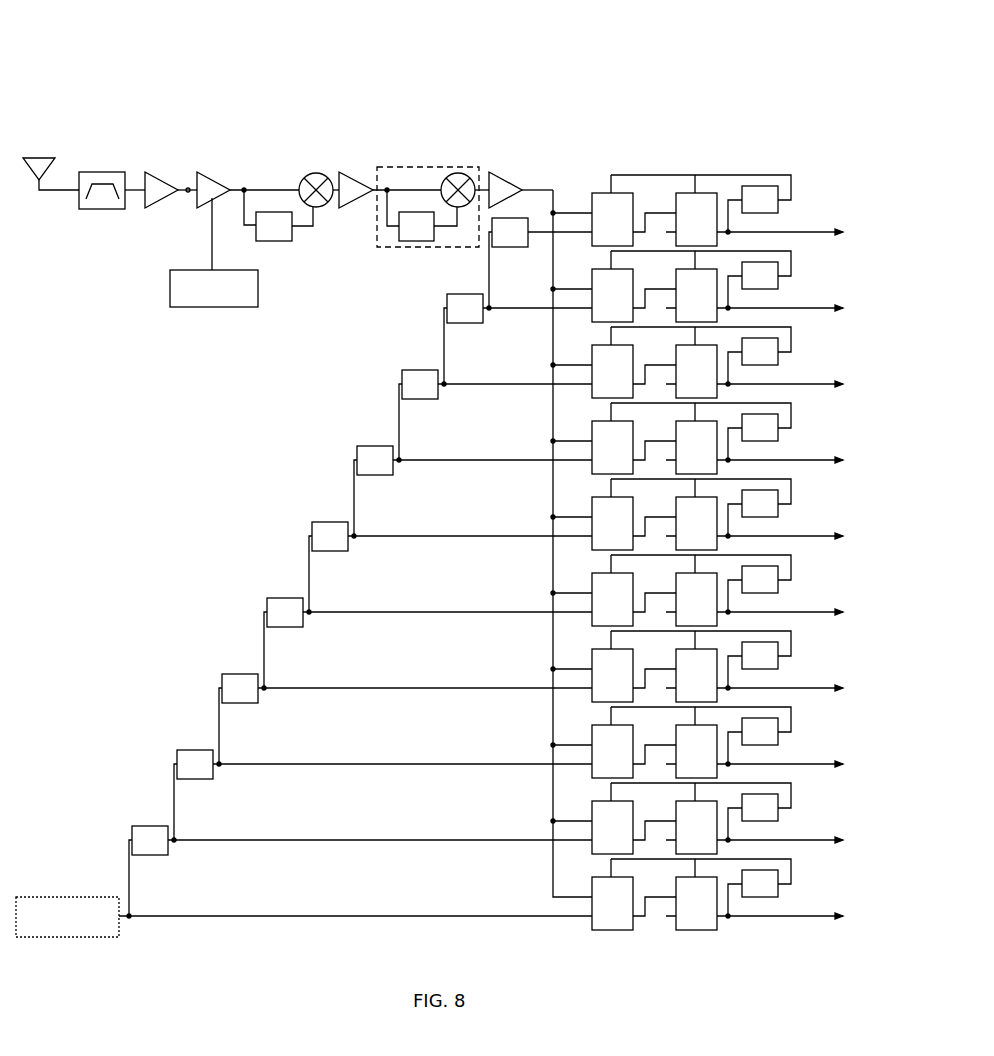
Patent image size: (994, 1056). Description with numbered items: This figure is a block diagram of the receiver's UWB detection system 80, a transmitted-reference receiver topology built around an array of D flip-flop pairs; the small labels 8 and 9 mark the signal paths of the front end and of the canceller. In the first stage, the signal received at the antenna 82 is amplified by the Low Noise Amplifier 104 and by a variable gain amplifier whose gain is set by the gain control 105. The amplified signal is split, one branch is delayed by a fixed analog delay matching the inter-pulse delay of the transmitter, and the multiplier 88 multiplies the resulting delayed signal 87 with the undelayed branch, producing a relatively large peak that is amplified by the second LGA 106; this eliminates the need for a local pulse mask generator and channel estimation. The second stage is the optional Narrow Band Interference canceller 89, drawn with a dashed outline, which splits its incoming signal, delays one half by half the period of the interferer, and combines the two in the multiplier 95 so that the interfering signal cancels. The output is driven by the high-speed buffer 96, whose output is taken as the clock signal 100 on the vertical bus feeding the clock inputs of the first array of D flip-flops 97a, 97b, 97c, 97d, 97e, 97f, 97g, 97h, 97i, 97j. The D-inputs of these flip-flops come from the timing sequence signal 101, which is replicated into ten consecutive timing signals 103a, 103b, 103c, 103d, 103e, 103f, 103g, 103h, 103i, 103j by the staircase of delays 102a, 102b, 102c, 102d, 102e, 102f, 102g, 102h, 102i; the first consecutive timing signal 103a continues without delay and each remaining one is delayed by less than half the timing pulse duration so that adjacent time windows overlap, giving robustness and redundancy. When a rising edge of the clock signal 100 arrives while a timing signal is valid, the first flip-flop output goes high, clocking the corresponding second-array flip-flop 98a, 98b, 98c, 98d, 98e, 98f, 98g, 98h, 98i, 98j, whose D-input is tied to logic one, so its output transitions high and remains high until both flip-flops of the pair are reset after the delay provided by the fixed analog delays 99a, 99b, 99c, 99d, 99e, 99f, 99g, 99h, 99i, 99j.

The UWB detection system 80 is at (106, 47).
The signal path / antenna input 8 is at (44, 158).
The antenna 82 is at (112, 172).
The Low Noise Amplifier 104 is at (163, 172).
The gain control 105 is at (190, 307).
The multiplier 88 is at (316, 173).
The delayed signal 87 is at (313, 230).
The second LGA 106 is at (362, 172).
The Narrow Band Interference canceller 89 is at (450, 167).
The correlator signal path 9 is at (407, 190).
The multiplier 95 is at (458, 166).
The high-speed buffer 96 is at (505, 172).
The clock signal 100 is at (553, 190).
The timing sequence signal 101 is at (70, 897).
The delay 102a is at (156, 855).
The delay 102b is at (201, 779).
The delay 102c is at (246, 703).
The delay 102d is at (291, 627).
The delay 102e is at (336, 551).
The delay 102f is at (381, 475).
The delay 102g is at (426, 399).
The delay 102h is at (471, 323).
The delay 102i is at (504, 247).
The first consecutive timing signal 103a is at (516, 918).
The consecutive timing signal 103b is at (516, 842).
The consecutive timing signal 103c is at (516, 766).
The consecutive timing signal 103d is at (516, 690).
The consecutive timing signal 103e is at (521, 614).
The consecutive timing signal 103f is at (523, 538).
The consecutive timing signal 103g is at (525, 462).
The consecutive timing signal 103h is at (526, 386).
The consecutive timing signal 103i is at (526, 310).
The consecutive timing signal 103j is at (533, 234).
The D Flip-Flop of first array 97a is at (597, 193).
The D Flip-Flop of first array 97b is at (592, 284).
The D Flip-Flop of first array 97c is at (592, 360).
The D Flip-Flop of first array 97d is at (592, 436).
The D Flip-Flop of first array 97e is at (592, 512).
The D Flip-Flop of first array 97f is at (592, 588).
The D Flip-Flop of first array 97g is at (592, 664).
The D Flip-Flop of first array 97h is at (592, 740).
The D Flip-Flop of first array 97i is at (592, 816).
The D Flip-Flop of first array 97j is at (592, 892).
The D Flip-Flop of second array 98a is at (686, 193).
The D Flip-Flop of second array 98b is at (676, 284).
The D Flip-Flop of second array 98c is at (676, 360).
The D Flip-Flop of second array 98d is at (676, 436).
The D Flip-Flop of second array 98e is at (676, 512).
The D Flip-Flop of second array 98f is at (676, 588).
The D Flip-Flop of second array 98g is at (676, 664).
The D Flip-Flop of second array 98h is at (676, 740).
The D Flip-Flop of second array 98i is at (676, 816).
The D Flip-Flop of second array 98j is at (676, 892).
The fixed analog delay 99a is at (778, 209).
The fixed analog delay 99b is at (778, 285).
The fixed analog delay 99c is at (778, 361).
The fixed analog delay 99d is at (778, 437).
The fixed analog delay 99e is at (778, 513).
The fixed analog delay 99f is at (778, 589).
The fixed analog delay 99g is at (778, 665).
The fixed analog delay 99h is at (778, 741).
The fixed analog delay 99i is at (778, 817).
The fixed analog delay 99j is at (778, 893).